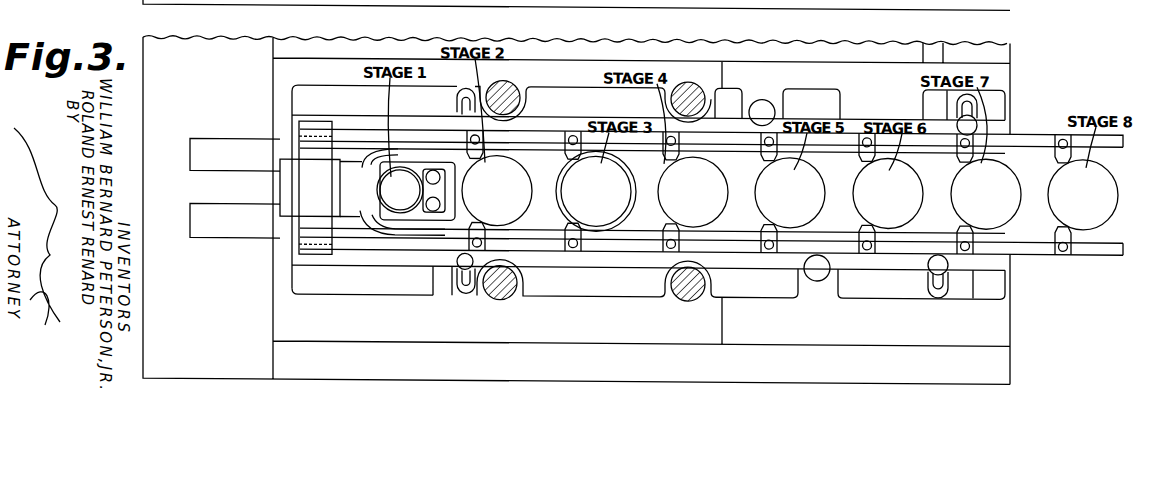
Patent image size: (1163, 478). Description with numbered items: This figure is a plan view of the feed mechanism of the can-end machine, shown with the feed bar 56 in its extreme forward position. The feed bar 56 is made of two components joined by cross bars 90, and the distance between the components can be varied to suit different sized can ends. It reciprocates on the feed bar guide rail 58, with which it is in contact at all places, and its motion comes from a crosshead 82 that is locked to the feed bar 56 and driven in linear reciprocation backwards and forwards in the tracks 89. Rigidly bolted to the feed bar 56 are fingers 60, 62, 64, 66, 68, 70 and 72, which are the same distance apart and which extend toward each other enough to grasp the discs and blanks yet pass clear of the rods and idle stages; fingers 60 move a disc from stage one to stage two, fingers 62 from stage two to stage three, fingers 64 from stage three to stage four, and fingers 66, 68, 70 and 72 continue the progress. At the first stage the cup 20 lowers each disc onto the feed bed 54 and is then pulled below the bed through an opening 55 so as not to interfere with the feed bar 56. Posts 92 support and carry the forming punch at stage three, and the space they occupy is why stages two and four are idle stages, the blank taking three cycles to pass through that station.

The cup 20 is at (385, 188).
The feed bed 54 is at (300, 221).
The opening 55 is at (347, 178).
The feed bar 56 is at (514, 135).
The feed bar guide rail 58 is at (533, 144).
The fingers 60 is at (481, 160).
The fingers 62 is at (578, 127).
The fingers 64 is at (670, 160).
The fingers 66 is at (759, 143).
The fingers 68 is at (857, 125).
The fingers 70 is at (963, 144).
The fingers 72 is at (1055, 138).
The crosshead 82 is at (349, 156).
The tracks 89 is at (220, 148).
The cross bars 90 is at (316, 227).
The posts 92 is at (508, 81).